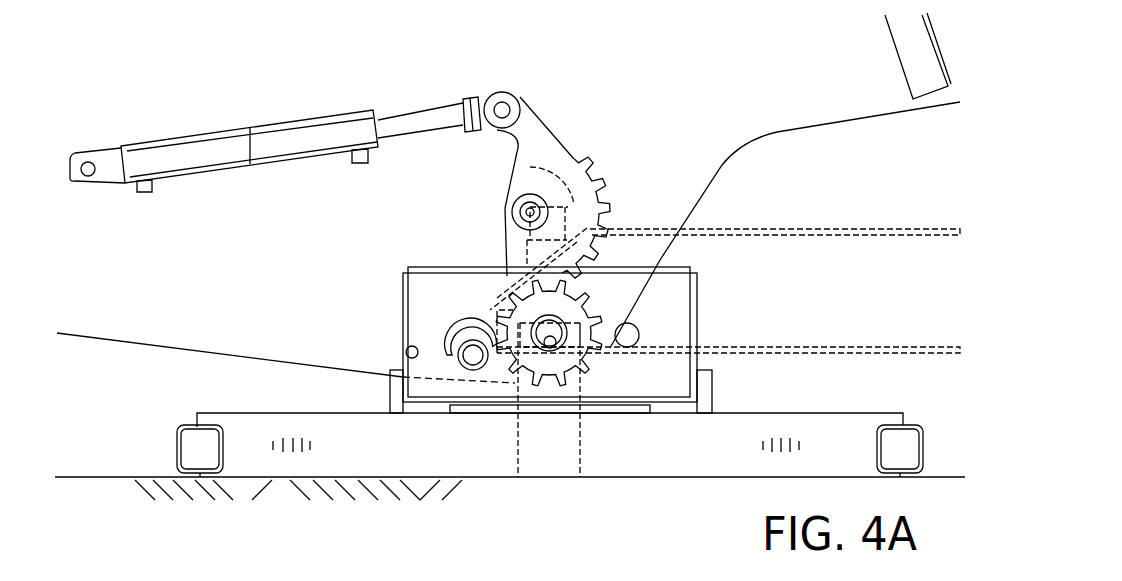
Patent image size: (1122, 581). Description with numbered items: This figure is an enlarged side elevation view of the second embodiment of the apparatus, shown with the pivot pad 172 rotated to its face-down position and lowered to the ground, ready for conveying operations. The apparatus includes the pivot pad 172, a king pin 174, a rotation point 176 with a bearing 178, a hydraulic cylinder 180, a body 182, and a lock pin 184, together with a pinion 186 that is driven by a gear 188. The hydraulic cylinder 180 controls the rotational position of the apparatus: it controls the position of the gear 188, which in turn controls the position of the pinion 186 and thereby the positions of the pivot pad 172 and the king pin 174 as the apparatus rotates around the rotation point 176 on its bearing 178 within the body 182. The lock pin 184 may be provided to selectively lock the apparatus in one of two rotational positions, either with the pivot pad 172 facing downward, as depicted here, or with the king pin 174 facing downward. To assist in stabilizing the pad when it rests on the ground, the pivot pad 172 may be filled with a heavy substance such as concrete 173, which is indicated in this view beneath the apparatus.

The pivot pad 172 is at (340, 482).
The concrete 173 is at (250, 458).
The king pin 174 is at (530, 167).
The rotation point 176 is at (557, 336).
The bearing 178 is at (547, 352).
The hydraulic cylinder 180 is at (433, 107).
The body 182 is at (700, 303).
The lock pin 184 is at (477, 368).
The pinion 186 is at (510, 308).
The gear 188 is at (617, 207).